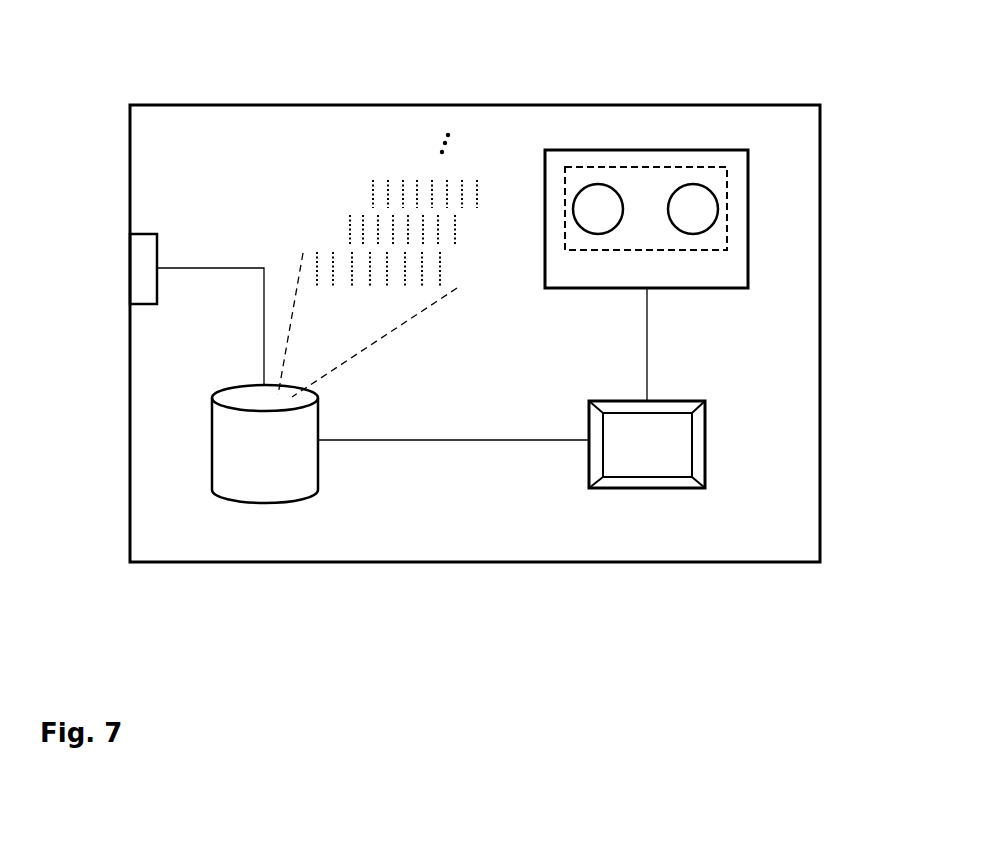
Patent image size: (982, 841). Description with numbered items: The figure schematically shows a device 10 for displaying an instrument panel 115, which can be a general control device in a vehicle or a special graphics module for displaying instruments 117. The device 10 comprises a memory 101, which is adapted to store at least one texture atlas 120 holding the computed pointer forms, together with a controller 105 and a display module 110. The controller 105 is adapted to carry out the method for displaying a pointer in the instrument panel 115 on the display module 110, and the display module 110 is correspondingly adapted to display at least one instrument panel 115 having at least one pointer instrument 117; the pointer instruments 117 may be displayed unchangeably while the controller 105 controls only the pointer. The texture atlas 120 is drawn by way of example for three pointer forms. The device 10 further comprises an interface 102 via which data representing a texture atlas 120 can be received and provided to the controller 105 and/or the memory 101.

The device 10 is at (792, 548).
The memory 101 is at (290, 467).
The interface 102 is at (143, 263).
The controller 105 is at (648, 467).
The display module 110 is at (737, 272).
The instrument panel 115 is at (684, 160).
The pointer instrument 117 is at (677, 197).
The texture atlas 120 is at (362, 180).